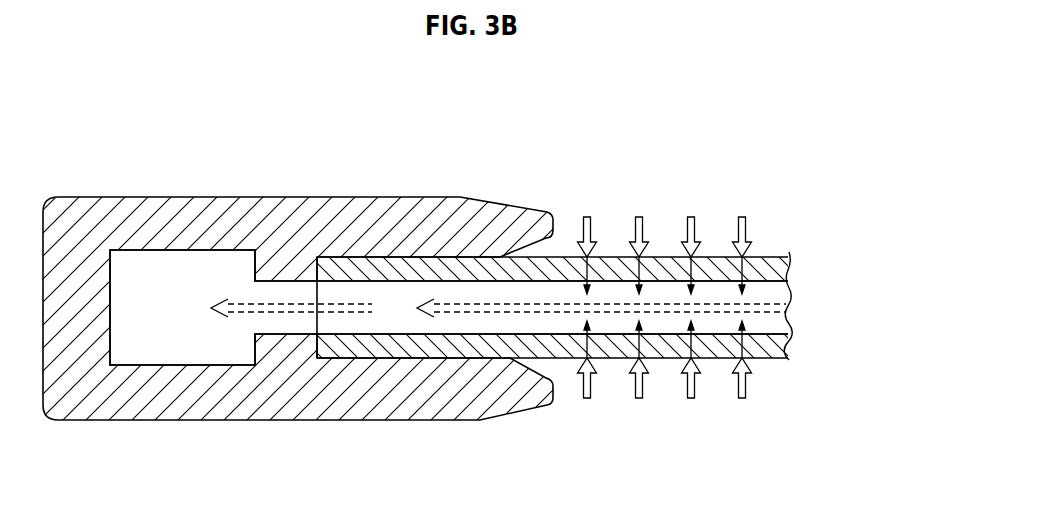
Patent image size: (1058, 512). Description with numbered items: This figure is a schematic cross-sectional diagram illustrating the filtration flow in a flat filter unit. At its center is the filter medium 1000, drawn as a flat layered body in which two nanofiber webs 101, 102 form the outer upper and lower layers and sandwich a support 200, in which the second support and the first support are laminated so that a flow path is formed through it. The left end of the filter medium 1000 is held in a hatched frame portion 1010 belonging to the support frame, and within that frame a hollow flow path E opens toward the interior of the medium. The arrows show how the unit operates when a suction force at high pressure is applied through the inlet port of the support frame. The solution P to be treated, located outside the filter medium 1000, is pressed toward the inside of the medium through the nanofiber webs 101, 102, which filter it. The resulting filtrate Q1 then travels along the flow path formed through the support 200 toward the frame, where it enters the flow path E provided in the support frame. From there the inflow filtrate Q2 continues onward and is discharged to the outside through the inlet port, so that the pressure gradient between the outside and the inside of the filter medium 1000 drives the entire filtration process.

The holder body / clamp 1010 is at (284, 220).
The flow path E is at (131, 274).
The filter medium 1000 is at (638, 312).
The nanofiber web 101 is at (782, 268).
The support 200 is at (786, 306).
The nanofiber web 102 is at (786, 345).
The solution to be treated P is at (665, 310).
The filtrate Q1 is at (584, 313).
The inflow filtrate Q2 is at (269, 313).